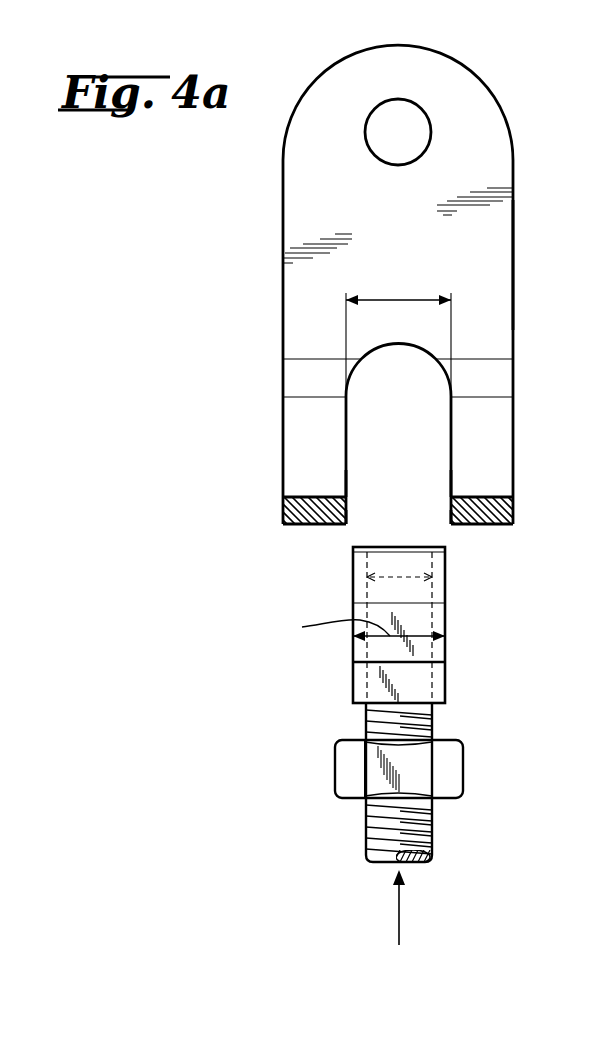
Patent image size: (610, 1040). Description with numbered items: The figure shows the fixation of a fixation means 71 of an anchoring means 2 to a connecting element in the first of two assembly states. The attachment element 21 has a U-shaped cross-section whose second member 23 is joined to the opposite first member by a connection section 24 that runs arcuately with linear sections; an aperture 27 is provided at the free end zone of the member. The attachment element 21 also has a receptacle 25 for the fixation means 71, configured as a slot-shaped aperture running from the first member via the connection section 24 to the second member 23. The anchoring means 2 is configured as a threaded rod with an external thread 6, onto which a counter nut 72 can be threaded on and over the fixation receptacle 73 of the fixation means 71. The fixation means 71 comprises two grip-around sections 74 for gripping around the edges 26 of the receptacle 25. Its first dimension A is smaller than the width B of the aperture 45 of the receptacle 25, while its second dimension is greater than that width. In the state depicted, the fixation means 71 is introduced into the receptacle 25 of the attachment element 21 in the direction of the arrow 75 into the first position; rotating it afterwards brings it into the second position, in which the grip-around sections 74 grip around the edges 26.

The anchoring means 2 is at (427, 807).
The external thread 6 is at (438, 841).
The attachment element 21 is at (403, 495).
The second member 23 is at (485, 265).
The connection section 24 is at (303, 511).
The receptacle 25 is at (368, 508).
The edges 26 is at (451, 497).
The aperture 27 is at (408, 134).
The aperture 45 is at (412, 410).
The fixation means 71 is at (443, 597).
The counter nut 72 is at (451, 770).
The fixation receptacle 73 is at (432, 575).
The grip-around sections 74 is at (437, 655).
The arrow 75 is at (400, 928).